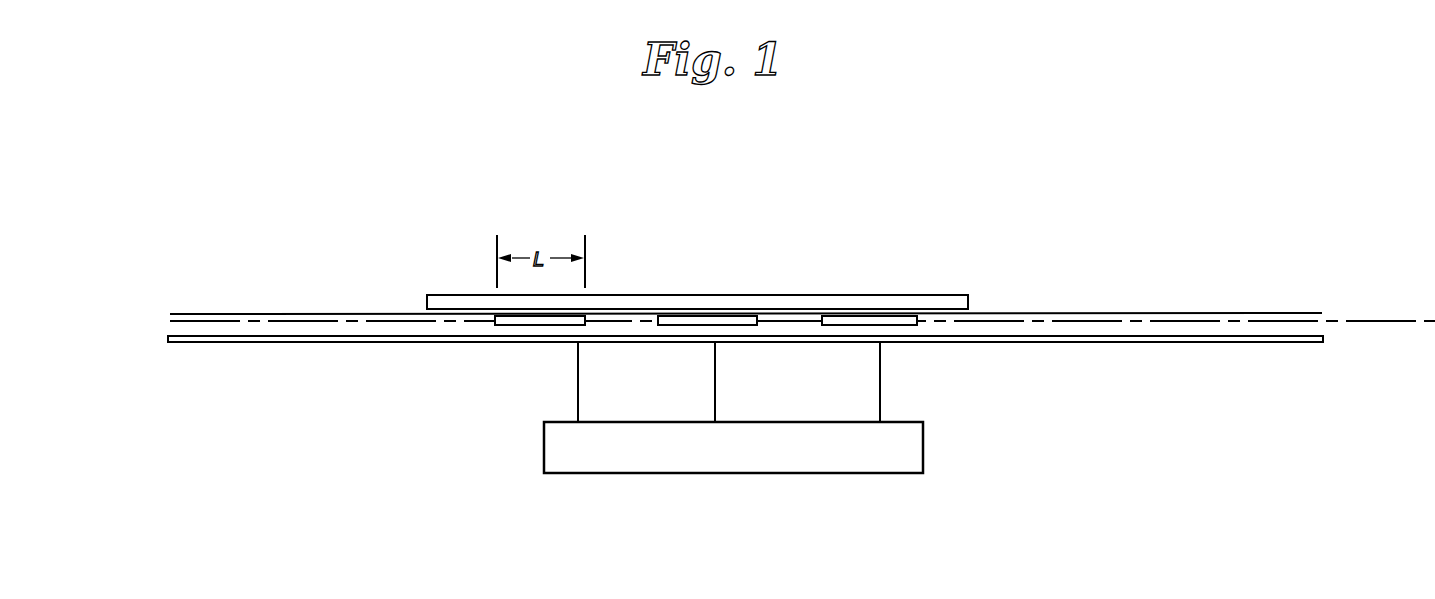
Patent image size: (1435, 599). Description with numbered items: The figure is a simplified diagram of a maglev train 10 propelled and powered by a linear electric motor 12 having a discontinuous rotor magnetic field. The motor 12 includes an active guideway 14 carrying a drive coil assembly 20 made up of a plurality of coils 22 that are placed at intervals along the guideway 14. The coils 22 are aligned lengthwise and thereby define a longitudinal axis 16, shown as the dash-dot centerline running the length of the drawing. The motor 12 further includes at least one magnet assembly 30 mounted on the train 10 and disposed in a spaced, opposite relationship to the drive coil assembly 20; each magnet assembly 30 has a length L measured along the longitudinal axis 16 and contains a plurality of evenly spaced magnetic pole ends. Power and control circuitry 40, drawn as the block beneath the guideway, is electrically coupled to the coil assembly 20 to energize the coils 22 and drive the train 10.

The maglev train 10 is at (703, 270).
The linear electric motor 12 is at (340, 448).
The active guideway 14 is at (150, 321).
The longitudinal axis 16 is at (1353, 321).
The drive coil assembly 20 is at (1202, 360).
The coils 22 is at (1038, 343).
The magnet assembly 30 is at (526, 340).
The power and control circuitry 40 is at (762, 490).